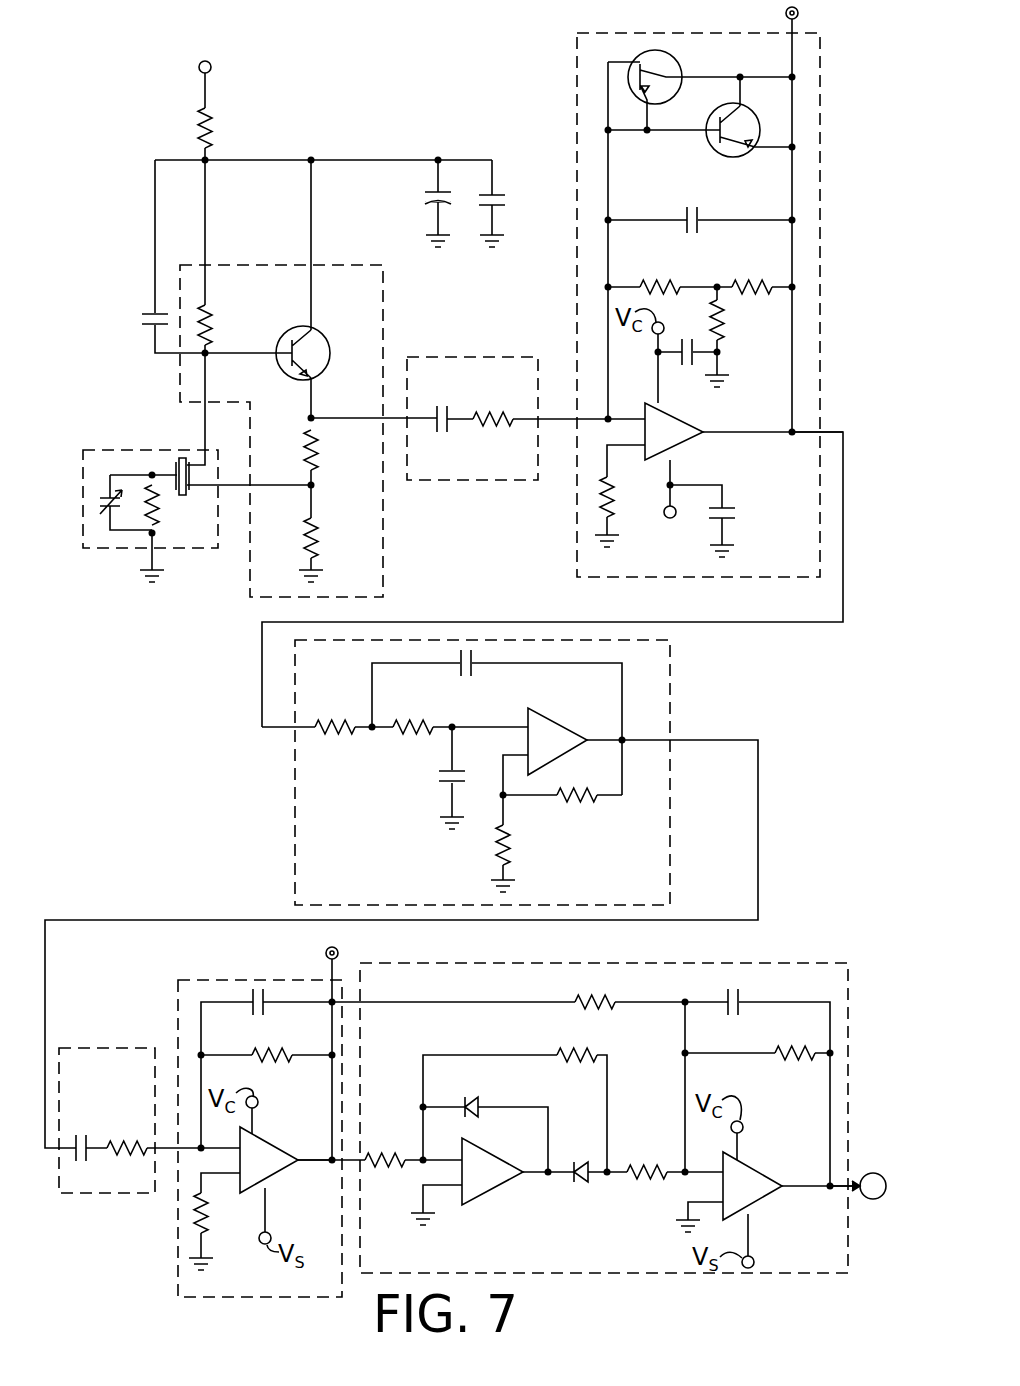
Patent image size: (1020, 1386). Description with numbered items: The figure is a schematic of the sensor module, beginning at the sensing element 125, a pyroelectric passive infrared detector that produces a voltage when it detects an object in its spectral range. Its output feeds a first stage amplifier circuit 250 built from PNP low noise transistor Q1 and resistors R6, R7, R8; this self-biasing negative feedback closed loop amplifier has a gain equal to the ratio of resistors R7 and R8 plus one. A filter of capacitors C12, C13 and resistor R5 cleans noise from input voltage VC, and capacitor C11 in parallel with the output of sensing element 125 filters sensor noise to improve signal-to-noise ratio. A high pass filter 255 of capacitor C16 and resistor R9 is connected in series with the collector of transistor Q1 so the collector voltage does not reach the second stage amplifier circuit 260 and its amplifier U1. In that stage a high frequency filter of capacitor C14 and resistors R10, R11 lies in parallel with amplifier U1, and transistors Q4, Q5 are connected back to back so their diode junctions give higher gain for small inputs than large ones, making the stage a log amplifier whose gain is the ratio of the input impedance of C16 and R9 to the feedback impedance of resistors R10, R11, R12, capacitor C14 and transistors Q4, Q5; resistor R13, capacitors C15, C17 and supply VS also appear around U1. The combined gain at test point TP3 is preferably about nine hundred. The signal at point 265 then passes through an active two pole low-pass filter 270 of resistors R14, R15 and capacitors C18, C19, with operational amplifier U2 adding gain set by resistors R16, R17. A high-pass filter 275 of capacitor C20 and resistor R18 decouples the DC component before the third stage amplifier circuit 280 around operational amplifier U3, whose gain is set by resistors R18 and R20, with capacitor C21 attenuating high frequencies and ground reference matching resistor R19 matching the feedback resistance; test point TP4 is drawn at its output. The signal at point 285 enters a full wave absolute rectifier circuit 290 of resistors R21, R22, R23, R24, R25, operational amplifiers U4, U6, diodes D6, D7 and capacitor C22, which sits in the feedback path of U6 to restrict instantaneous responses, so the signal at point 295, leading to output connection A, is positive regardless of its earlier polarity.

The sensing element 125 is at (78, 550).
The first stage amplifier circuit 250 is at (232, 266).
The high pass filter 255 is at (487, 482).
The second stage amplifier circuit 260 is at (822, 212).
The point 265 is at (795, 428).
The active two pole low-pass filter 270 is at (672, 665).
The high-pass filter 275 is at (77, 1048).
The third stage amplifier circuit 280 is at (232, 980).
The point 285 is at (330, 1163).
The full wave absolute rectifier circuit 290 is at (770, 963).
The point 295 is at (830, 1190).
The resistor R5 is at (213, 112).
The resistor R6 is at (213, 306).
The resistor R7 is at (318, 462).
The resistor R8 is at (318, 540).
The resistor R9 is at (492, 425).
The resistor R10 is at (645, 288).
The resistor R11 is at (738, 290).
The resistor R12 is at (723, 318).
The resistor R13 is at (603, 520).
The resistor R14 is at (328, 730).
The resistor R15 is at (405, 725).
The resistor R16 is at (498, 848).
The resistor R17 is at (565, 800).
The resistor R18 is at (112, 1155).
The ground reference matching resistor R19 is at (195, 1220).
The resistor R20 is at (270, 1058).
The resistor R21 is at (368, 1155).
The resistor R22 is at (572, 1052).
The resistor R23 is at (598, 995).
The resistor R24 is at (625, 1165).
The resistor R25 is at (808, 1060).
The capacitor C11 is at (150, 312).
The capacitor C12 is at (430, 192).
The capacitor C13 is at (499, 198).
The capacitor C14 is at (685, 205).
The capacitor C15 is at (680, 365).
The capacitor C16 is at (440, 405).
The capacitor C17 is at (732, 505).
The capacitor C18 is at (475, 668).
The capacitor C19 is at (442, 785).
The capacitor C20 is at (72, 1138).
The capacitor C21 is at (265, 1012).
The capacitor C22 is at (745, 1002).
The PNP low noise transistor Q1 is at (318, 342).
The transistor Q4 is at (672, 66).
The transistor Q5 is at (716, 150).
The amplifier U1 is at (683, 438).
The operational amplifier U2 is at (545, 725).
The operational amplifier U3 is at (262, 1150).
The operational amplifier U4 is at (480, 1195).
The operational amplifier U6 is at (745, 1175).
The diode D6 is at (462, 1100).
The diode D7 is at (582, 1185).
The test point TP3 is at (798, 16).
The test point TP4 is at (326, 948).
The input voltage VC is at (211, 63).
The supply voltage terminal VS is at (668, 518).
The output connection point A is at (873, 1186).